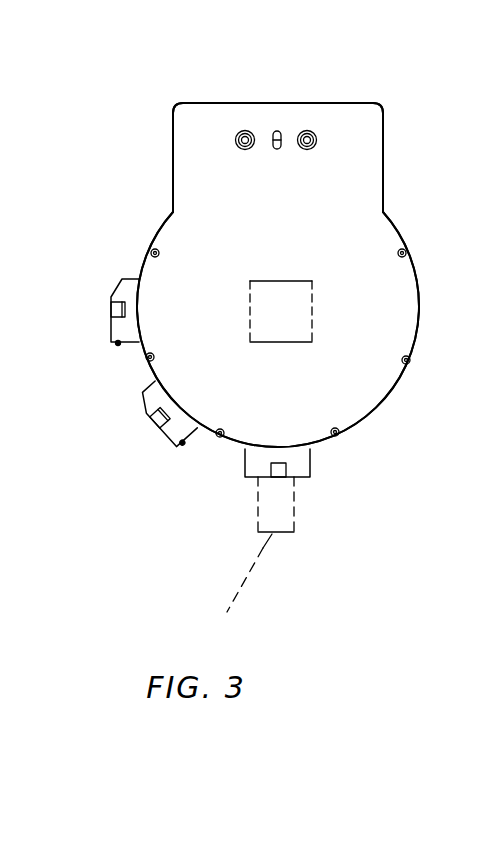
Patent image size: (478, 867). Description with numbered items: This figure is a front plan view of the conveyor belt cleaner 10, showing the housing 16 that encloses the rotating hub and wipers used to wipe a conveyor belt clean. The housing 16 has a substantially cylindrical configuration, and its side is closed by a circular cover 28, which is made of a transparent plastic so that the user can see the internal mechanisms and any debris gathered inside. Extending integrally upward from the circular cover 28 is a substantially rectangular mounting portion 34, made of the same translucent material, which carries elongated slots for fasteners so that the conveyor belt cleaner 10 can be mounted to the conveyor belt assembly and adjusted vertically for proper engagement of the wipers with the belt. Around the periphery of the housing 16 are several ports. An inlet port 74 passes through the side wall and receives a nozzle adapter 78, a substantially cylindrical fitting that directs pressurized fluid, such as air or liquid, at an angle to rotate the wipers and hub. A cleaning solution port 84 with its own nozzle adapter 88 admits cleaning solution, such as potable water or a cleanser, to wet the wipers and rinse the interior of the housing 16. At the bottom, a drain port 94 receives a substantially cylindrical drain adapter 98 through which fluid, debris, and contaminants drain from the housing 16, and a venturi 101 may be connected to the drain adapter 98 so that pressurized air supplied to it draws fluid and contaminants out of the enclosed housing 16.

The conveyor belt cleaner 10 is at (136, 560).
The housing 16 is at (170, 171).
The circular cover 28 is at (372, 402).
The rectangular mounting portion 34 is at (384, 123).
The inlet port 74 is at (114, 346).
The nozzle adapter 78 is at (118, 283).
The cleaning solution port 84 is at (145, 414).
The nozzle adapter 88 is at (176, 447).
The drain port 94 is at (238, 487).
The drain adapter 98 is at (312, 480).
The venturi 101 is at (239, 588).